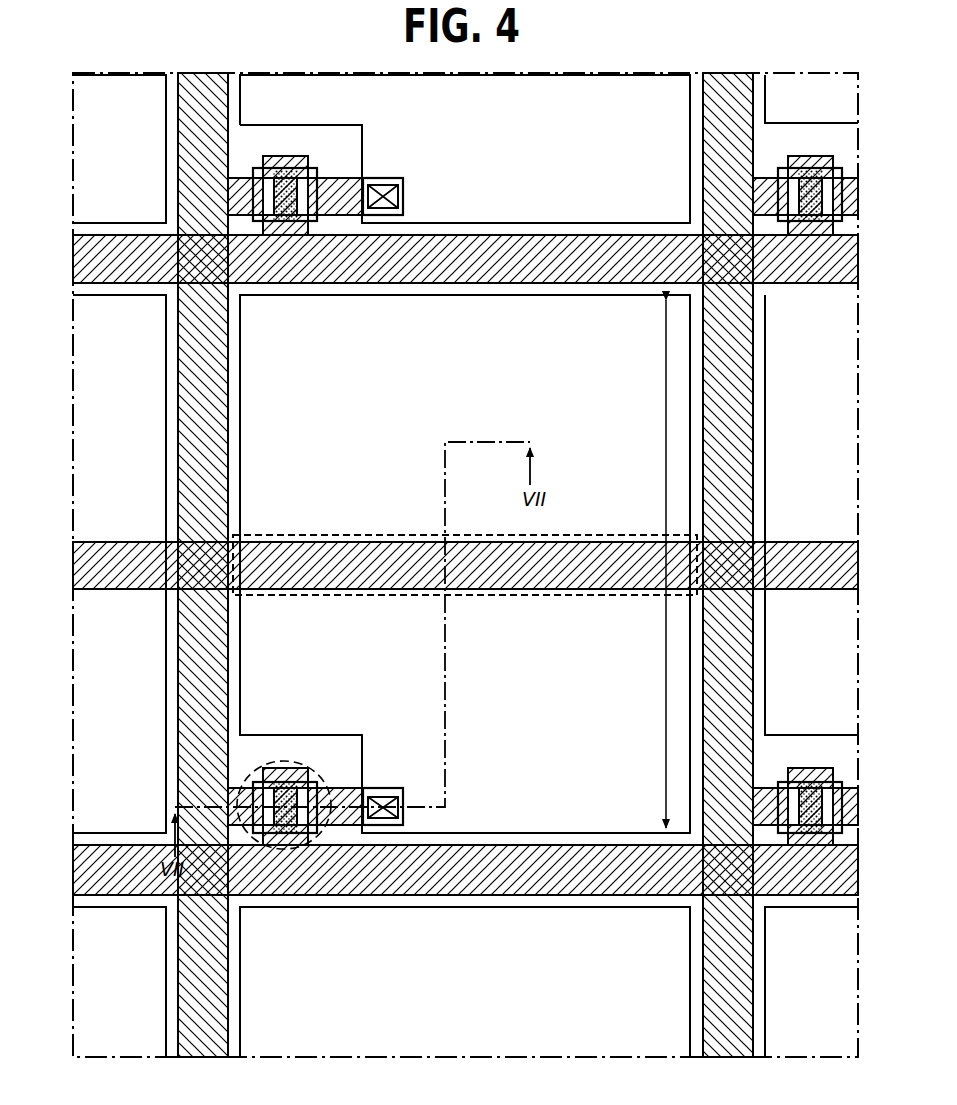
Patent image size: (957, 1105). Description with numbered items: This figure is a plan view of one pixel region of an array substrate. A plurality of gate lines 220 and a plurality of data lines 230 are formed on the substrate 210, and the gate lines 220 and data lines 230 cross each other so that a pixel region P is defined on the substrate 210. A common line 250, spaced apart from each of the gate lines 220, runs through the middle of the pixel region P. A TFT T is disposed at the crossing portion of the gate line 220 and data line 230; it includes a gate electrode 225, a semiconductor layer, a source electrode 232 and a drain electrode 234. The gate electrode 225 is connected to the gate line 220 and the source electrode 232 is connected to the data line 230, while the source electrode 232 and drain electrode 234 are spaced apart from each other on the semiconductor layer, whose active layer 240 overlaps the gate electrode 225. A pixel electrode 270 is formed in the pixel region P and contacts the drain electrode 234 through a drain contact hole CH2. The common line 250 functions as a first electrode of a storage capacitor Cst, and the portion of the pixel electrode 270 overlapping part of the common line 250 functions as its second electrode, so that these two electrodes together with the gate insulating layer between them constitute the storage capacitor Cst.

The substrate 210 is at (677, 942).
The gate line 220 is at (540, 255).
The gate electrode 225 is at (285, 770).
The data line 230 is at (192, 660).
The source electrode 232 is at (253, 780).
The drain electrode 234 is at (320, 780).
The active layer 240 is at (273, 837).
The common line 250 is at (572, 548).
The pixel electrode 270 is at (270, 400).
The drain contact hole CH2 is at (383, 800).
The storage capacitor Cst is at (355, 535).
The TFT T is at (318, 862).
The pixel region P is at (656, 564).